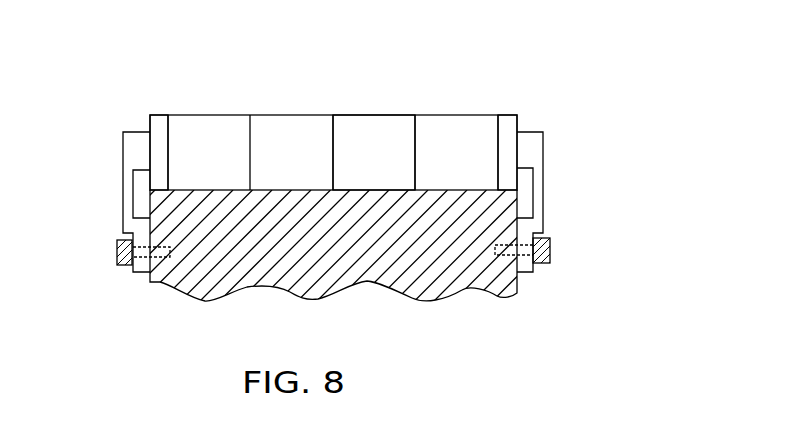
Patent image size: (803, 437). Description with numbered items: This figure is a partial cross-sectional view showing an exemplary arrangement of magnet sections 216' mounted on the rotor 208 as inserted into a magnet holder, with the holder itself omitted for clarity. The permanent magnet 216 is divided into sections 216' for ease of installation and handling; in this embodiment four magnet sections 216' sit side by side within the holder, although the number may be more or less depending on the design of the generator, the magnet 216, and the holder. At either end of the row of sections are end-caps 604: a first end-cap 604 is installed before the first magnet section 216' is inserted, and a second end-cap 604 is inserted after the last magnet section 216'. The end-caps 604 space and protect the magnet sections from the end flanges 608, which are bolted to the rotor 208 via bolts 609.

The rotor 208 is at (430, 292).
The permanent magnet 216 is at (333, 103).
The magnet section 216' is at (387, 124).
The end-cap 604 is at (162, 117).
The end flange 608 is at (123, 148).
The bolt 609 is at (117, 252).